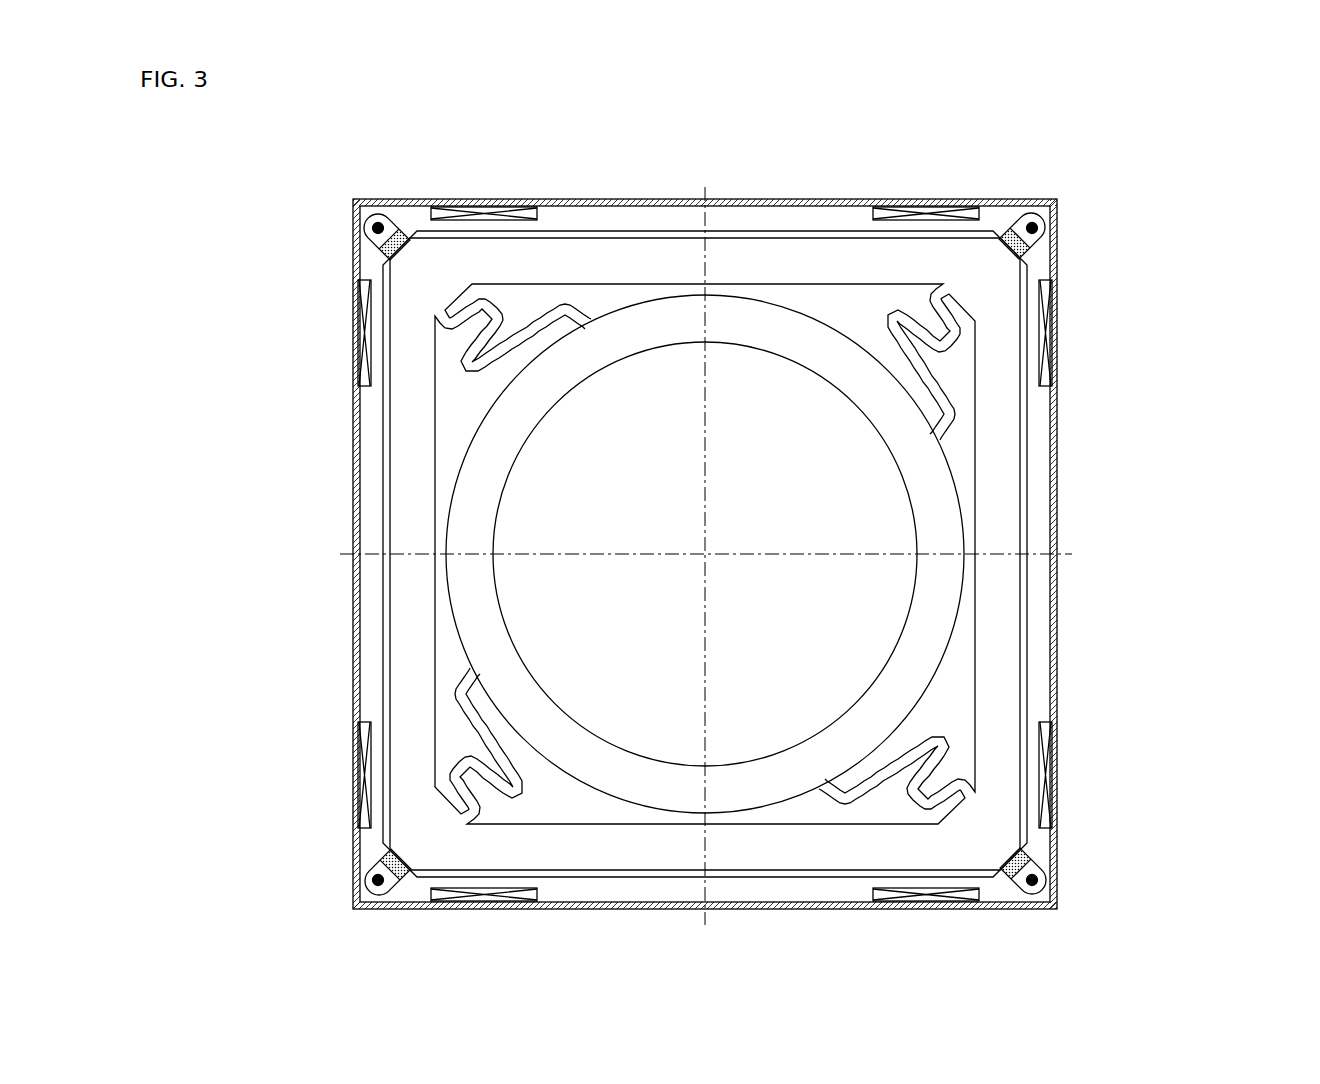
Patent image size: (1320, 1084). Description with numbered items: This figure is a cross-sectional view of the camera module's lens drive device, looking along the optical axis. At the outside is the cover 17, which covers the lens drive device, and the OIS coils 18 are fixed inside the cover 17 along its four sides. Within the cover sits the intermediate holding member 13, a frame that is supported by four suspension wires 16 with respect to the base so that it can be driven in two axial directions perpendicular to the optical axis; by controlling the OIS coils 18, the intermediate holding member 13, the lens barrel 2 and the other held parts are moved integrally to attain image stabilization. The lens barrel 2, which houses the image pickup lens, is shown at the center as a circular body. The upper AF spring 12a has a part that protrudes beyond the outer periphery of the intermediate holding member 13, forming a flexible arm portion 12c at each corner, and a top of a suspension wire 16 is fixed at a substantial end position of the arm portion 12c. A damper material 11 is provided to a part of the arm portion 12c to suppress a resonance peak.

The lens barrel 2 is at (910, 523).
The damper material 11 is at (1036, 248).
The AF spring 12a is at (750, 318).
The arm portion 12c is at (1044, 200).
The intermediate holding member 13 is at (553, 230).
The suspension wire 16 is at (1040, 226).
The cover 17 is at (1058, 577).
The OIS coil 18 is at (1051, 326).